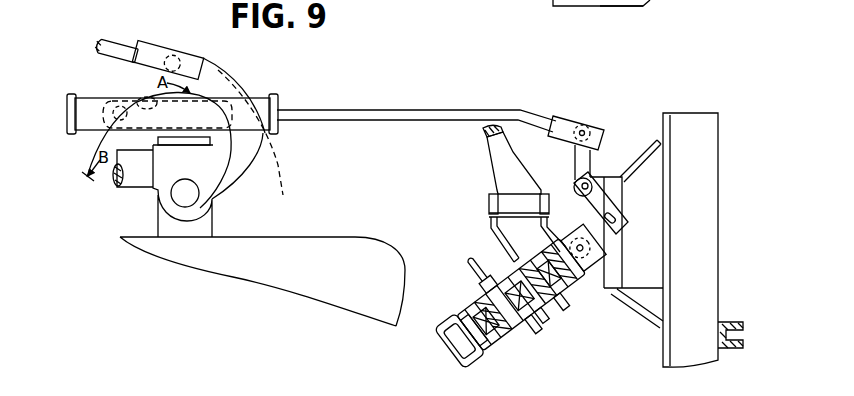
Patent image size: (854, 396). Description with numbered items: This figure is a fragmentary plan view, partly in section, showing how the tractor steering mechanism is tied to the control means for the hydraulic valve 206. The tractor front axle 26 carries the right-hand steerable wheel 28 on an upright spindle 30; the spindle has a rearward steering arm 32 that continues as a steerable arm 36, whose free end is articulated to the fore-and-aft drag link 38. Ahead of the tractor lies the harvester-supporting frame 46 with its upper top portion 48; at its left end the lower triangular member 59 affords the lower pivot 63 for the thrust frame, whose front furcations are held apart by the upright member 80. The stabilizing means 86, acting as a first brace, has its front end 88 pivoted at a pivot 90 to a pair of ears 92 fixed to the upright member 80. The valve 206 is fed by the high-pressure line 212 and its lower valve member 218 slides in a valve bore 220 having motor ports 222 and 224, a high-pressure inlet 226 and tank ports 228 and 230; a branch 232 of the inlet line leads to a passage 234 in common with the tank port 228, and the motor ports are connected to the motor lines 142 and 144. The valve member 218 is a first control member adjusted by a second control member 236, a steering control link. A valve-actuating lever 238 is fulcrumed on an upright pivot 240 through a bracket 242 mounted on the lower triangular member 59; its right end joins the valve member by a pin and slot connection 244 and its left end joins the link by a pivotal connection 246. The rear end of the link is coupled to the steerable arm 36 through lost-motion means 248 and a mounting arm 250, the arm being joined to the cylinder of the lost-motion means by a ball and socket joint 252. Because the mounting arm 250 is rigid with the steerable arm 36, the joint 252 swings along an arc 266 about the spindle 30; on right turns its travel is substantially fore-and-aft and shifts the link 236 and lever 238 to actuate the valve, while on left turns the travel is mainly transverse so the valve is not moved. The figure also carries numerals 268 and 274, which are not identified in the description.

The transverse axle 26 is at (197, 144).
The right-hand steerable wheel 28 is at (310, 236).
The right-hand spindle 30 is at (195, 199).
The steering arm 32 is at (137, 182).
The steerable arm 36 is at (221, 81).
The drag link 38 is at (153, 50).
The harvester-supporting frame 46 is at (723, 238).
The top portion 48 is at (718, 292).
The lower triangular member 59 is at (657, 141).
The lower pivot 63 is at (588, 248).
The upright member 80 is at (527, 251).
The stabilizing means 86 is at (481, 138).
The front end 88 is at (492, 156).
The pivot 90 is at (490, 200).
The ears 92 is at (545, 200).
The motor line 142 is at (568, 310).
The motor line 144 is at (539, 334).
The valve 206 is at (456, 317).
The high-pressure line 212 is at (471, 261).
The lower valve member 218 is at (463, 338).
The valve bore 220 is at (488, 333).
The motor port 222 is at (533, 311).
The motor port 224 is at (518, 331).
The high-pressure inlet 226 is at (519, 273).
The tank port 228 is at (505, 336).
The tank port 230 is at (567, 291).
The branch 232 is at (477, 292).
The passage 234 is at (472, 363).
The second control member 236 is at (384, 108).
The valve-actuating lever 238 is at (588, 157).
The upright pivot 240 is at (592, 176).
The bracket 242 is at (615, 189).
The pin and slot connection 244 is at (618, 228).
The pivotal connection 246 is at (586, 125).
The lost-motion means 248 is at (88, 95).
The mounting arm 250 is at (140, 97).
The ball and socket joint 252 is at (112, 118).
The arc 266 is at (284, 178).
The housing fragment 268 is at (547, 3).
The housing edge 274 is at (609, 5).